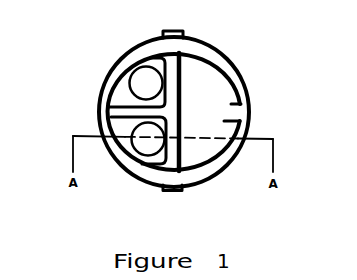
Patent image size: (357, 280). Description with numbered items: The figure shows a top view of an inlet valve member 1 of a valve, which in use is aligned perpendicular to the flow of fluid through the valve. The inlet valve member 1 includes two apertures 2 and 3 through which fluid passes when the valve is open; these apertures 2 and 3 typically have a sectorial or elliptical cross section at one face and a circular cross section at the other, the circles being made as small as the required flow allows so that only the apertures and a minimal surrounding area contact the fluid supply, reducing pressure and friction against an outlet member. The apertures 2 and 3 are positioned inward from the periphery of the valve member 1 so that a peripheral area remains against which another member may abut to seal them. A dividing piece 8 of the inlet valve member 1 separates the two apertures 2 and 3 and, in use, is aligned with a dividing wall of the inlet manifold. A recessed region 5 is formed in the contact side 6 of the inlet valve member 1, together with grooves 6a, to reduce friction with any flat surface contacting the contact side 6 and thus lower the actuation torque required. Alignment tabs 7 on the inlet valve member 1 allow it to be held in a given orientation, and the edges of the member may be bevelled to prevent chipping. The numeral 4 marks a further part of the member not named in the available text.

The inlet valve member 1 is at (68, 279).
The aperture 2 is at (142, 85).
The aperture 3 is at (138, 140).
The lower chamber 4 is at (143, 170).
The recessed region 5 is at (202, 87).
The contact side 6 is at (190, 143).
The grooves 6a is at (240, 106).
The alignment tabs 7 is at (183, 33).
The dividing piece 8 is at (127, 113).